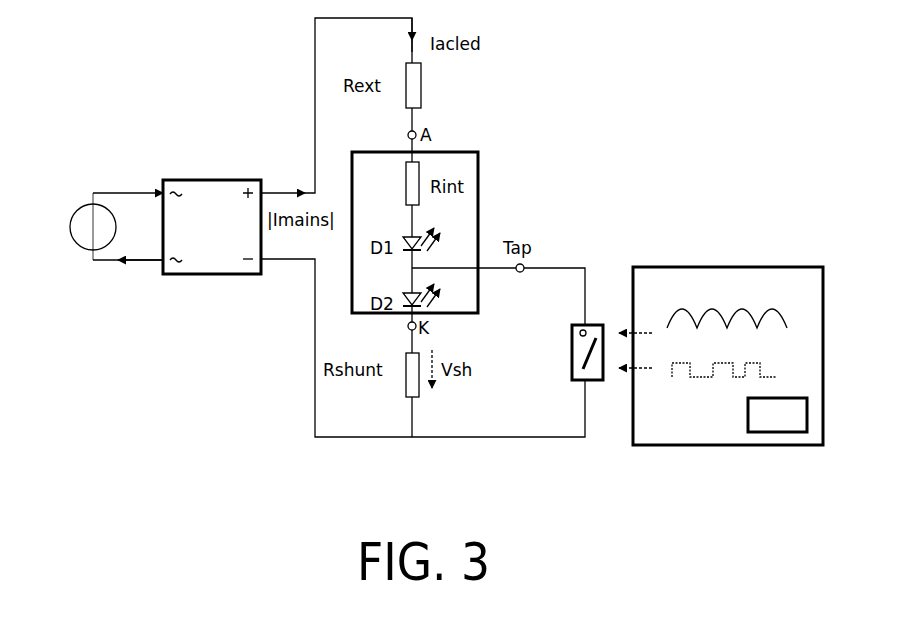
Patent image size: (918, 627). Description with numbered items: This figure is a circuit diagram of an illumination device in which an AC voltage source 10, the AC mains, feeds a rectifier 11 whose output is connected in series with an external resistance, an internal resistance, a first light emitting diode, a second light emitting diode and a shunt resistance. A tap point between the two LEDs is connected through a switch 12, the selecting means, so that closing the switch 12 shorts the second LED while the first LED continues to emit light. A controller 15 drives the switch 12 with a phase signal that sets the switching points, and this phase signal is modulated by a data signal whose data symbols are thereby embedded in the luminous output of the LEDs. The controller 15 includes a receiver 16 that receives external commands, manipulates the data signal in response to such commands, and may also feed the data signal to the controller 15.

The AC voltage source 10 is at (70, 229).
The rectifier 11 is at (211, 276).
The switch 12 is at (533, 366).
The controller 15 is at (727, 265).
The receiver 16 is at (773, 434).